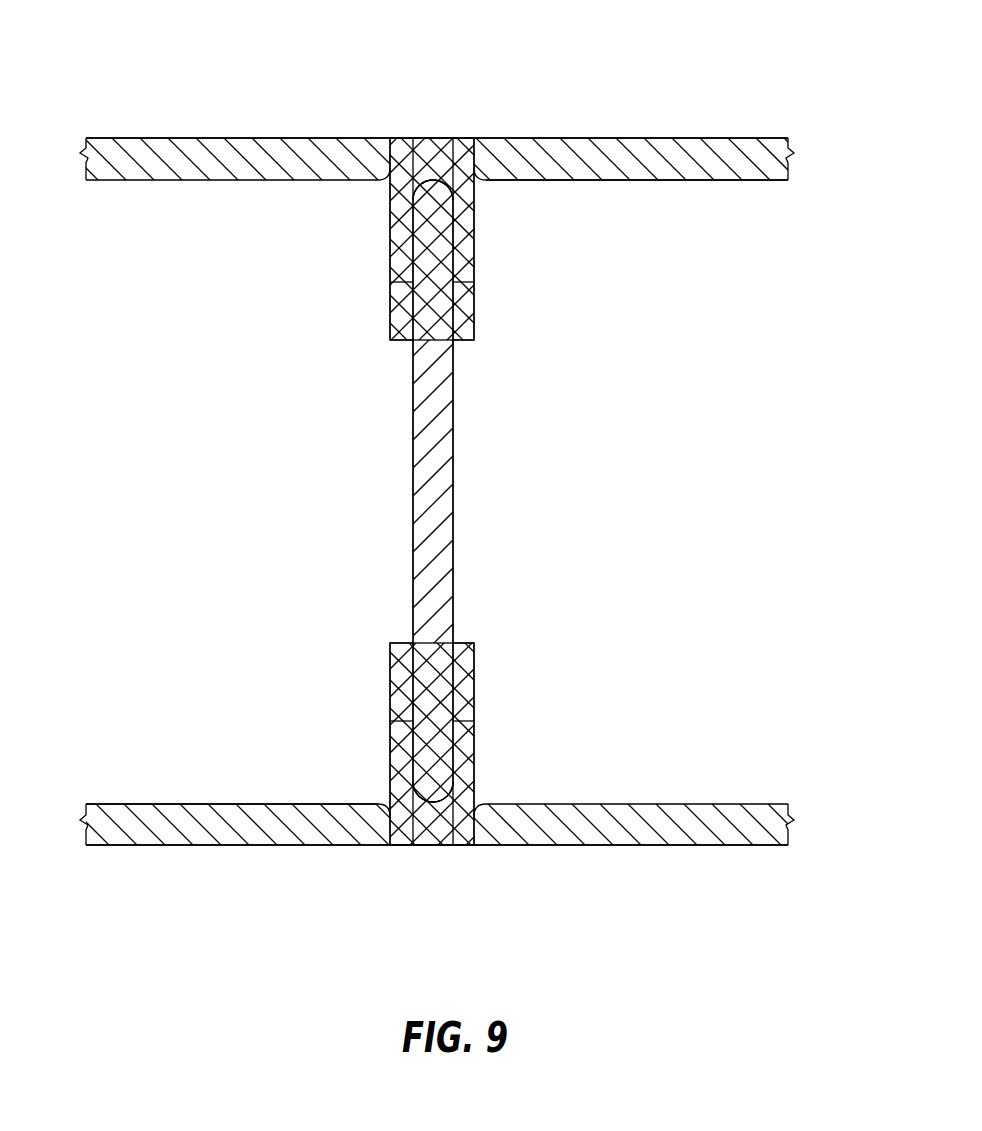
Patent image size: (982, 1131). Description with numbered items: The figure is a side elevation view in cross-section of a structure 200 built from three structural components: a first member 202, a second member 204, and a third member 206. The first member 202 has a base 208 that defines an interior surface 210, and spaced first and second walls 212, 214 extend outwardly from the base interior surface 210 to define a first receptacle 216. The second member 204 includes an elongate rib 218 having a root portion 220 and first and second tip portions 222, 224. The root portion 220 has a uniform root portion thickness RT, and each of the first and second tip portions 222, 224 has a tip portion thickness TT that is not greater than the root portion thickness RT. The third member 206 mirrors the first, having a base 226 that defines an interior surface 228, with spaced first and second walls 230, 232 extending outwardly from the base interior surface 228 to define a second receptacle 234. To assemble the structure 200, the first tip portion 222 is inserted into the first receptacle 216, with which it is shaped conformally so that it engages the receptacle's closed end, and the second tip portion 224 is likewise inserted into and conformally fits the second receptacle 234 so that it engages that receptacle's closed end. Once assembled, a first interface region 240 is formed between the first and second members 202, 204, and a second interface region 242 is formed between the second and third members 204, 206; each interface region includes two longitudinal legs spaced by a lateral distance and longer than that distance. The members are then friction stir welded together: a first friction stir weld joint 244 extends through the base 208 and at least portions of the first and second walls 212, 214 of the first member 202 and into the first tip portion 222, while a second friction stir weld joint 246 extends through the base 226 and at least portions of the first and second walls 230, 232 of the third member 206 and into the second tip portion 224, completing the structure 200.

The structure 200 is at (561, 108).
The first member 202 is at (161, 140).
The second member 204 is at (448, 587).
The third member 206 is at (656, 851).
The base 208 is at (720, 137).
The interior surface 210 is at (697, 181).
The first wall 212 is at (390, 247).
The second wall 214 is at (474, 247).
The first receptacle 216 is at (430, 316).
The elongate rib 218 is at (437, 480).
The root portion 220 is at (445, 430).
The first tip portion 222 is at (433, 196).
The second tip portion 224 is at (432, 800).
The base 226 is at (204, 846).
The interior surface 228 is at (165, 803).
The first wall 230 is at (390, 670).
The second wall 232 is at (474, 670).
The second receptacle 234 is at (438, 658).
The first interface region 240 is at (467, 282).
The second interface region 242 is at (477, 721).
The first friction stir weld joint 244 is at (395, 282).
The second friction stir weld joint 246 is at (388, 721).
The tip portion thickness TT is at (465, 775).
The root portion thickness RT is at (465, 530).